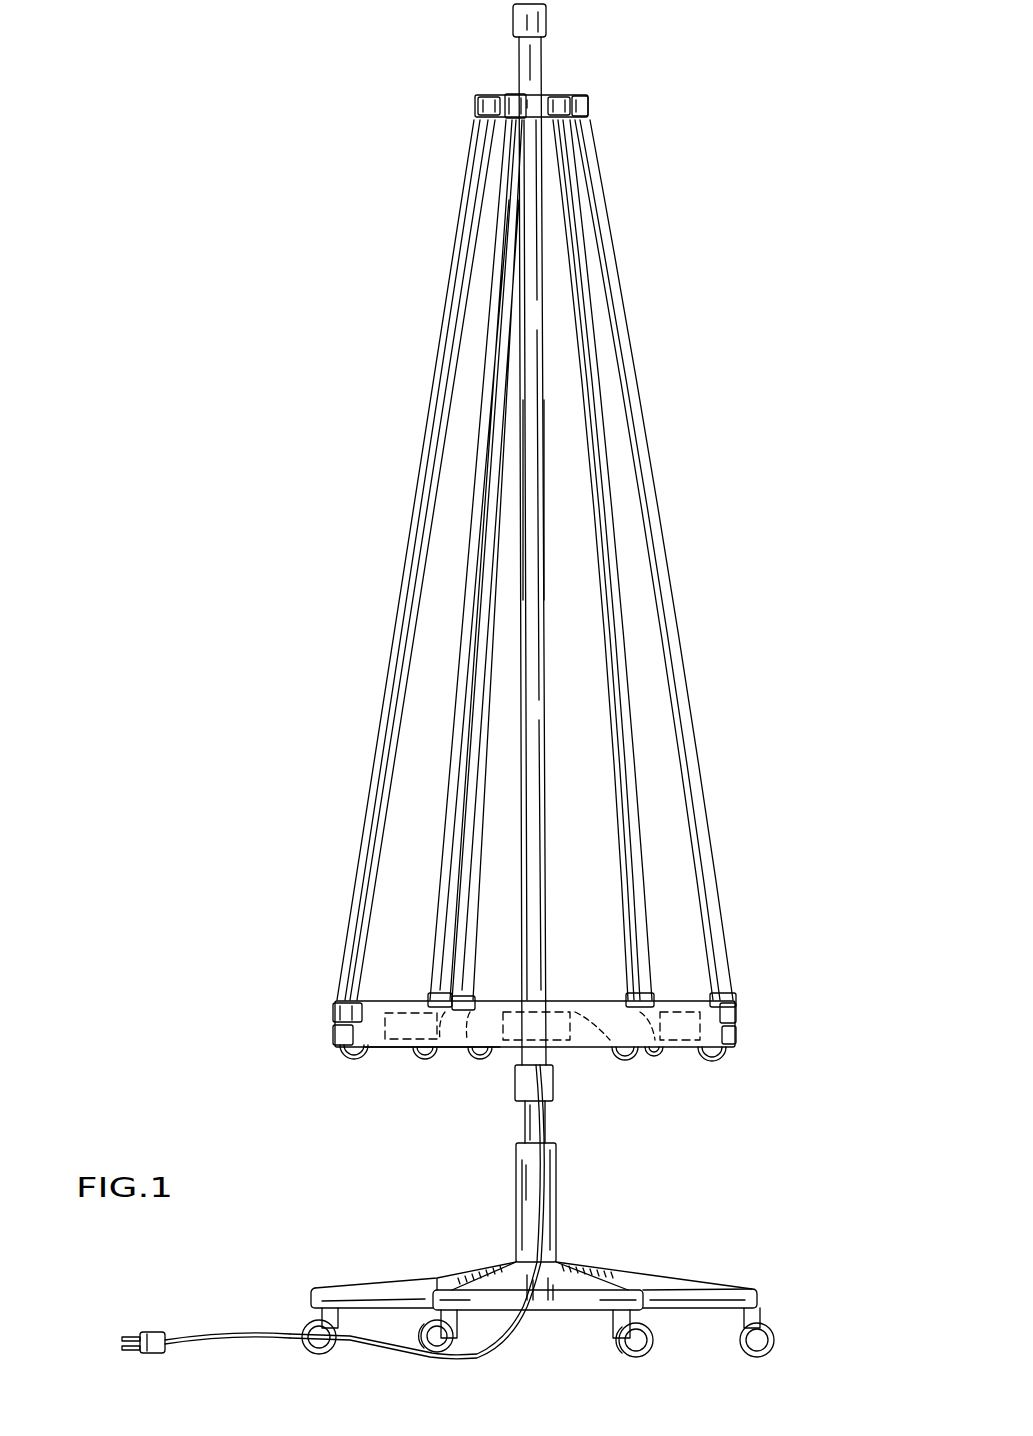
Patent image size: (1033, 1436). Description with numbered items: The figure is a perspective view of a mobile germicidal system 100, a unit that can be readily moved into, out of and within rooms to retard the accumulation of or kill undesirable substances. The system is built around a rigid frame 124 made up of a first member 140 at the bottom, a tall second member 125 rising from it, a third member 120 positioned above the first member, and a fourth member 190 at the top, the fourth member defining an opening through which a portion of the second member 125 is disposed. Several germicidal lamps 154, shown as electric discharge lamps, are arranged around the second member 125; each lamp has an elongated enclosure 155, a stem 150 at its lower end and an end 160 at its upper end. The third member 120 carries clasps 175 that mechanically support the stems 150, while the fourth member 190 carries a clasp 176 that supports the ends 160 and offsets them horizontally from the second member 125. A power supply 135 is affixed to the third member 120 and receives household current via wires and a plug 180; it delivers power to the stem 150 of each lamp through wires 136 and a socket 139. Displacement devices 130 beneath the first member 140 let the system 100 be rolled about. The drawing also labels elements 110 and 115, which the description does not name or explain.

The mobile germicidal system 100 is at (220, 117).
The base assembly 110 is at (590, 1142).
The pole section 115 is at (537, 1128).
The third member 120 is at (397, 1046).
The frame 124 is at (550, 492).
The second member 125 is at (535, 582).
The displacement device 130 is at (762, 1328).
The power supply 135 is at (700, 1013).
The wires 136 is at (336, 1058).
The socket 139 is at (338, 1035).
The first member 140 is at (662, 1288).
The stem 150 is at (730, 997).
The germicidal lamp 154 is at (612, 230).
The enclosure 155 is at (612, 302).
The end 160 is at (512, 105).
The clasp 175 is at (340, 1012).
The clasp 176 is at (488, 98).
The plug 180 is at (143, 1332).
The fourth member 190 is at (541, 99).